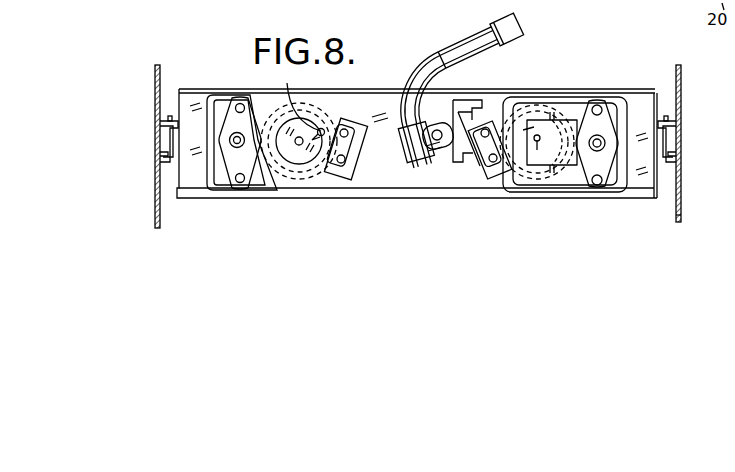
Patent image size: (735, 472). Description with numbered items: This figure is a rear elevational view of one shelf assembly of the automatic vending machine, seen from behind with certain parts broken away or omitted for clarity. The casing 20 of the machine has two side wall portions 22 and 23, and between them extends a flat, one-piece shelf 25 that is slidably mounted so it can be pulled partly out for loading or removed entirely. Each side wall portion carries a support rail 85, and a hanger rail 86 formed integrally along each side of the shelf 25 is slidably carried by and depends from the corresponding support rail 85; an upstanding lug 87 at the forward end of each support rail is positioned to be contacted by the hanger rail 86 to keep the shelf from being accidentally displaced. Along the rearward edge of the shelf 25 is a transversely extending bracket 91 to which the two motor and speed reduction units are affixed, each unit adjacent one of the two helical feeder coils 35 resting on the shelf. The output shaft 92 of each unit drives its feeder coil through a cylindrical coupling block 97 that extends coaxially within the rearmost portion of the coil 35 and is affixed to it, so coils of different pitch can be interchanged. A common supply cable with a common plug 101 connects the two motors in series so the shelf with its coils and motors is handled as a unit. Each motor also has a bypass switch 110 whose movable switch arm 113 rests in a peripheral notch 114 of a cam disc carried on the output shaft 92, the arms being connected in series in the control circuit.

The casing 20 is at (691, 211).
The side wall portion 22 is at (681, 90).
The side wall portion 23 is at (156, 88).
The shelf 25 is at (452, 189).
The helical feeder coil 35 is at (333, 108).
The support rail 85 is at (160, 165).
The hanger rail 86 is at (160, 131).
The upstanding lug 87 is at (170, 116).
The bracket 91 is at (238, 89).
The output shaft 92 is at (300, 146).
The coupling block 97 is at (309, 100).
The plug 101 is at (511, 36).
The bypass switch 110 is at (349, 162).
The switch arm 113 is at (325, 128).
The peripheral notch 114 is at (298, 98).